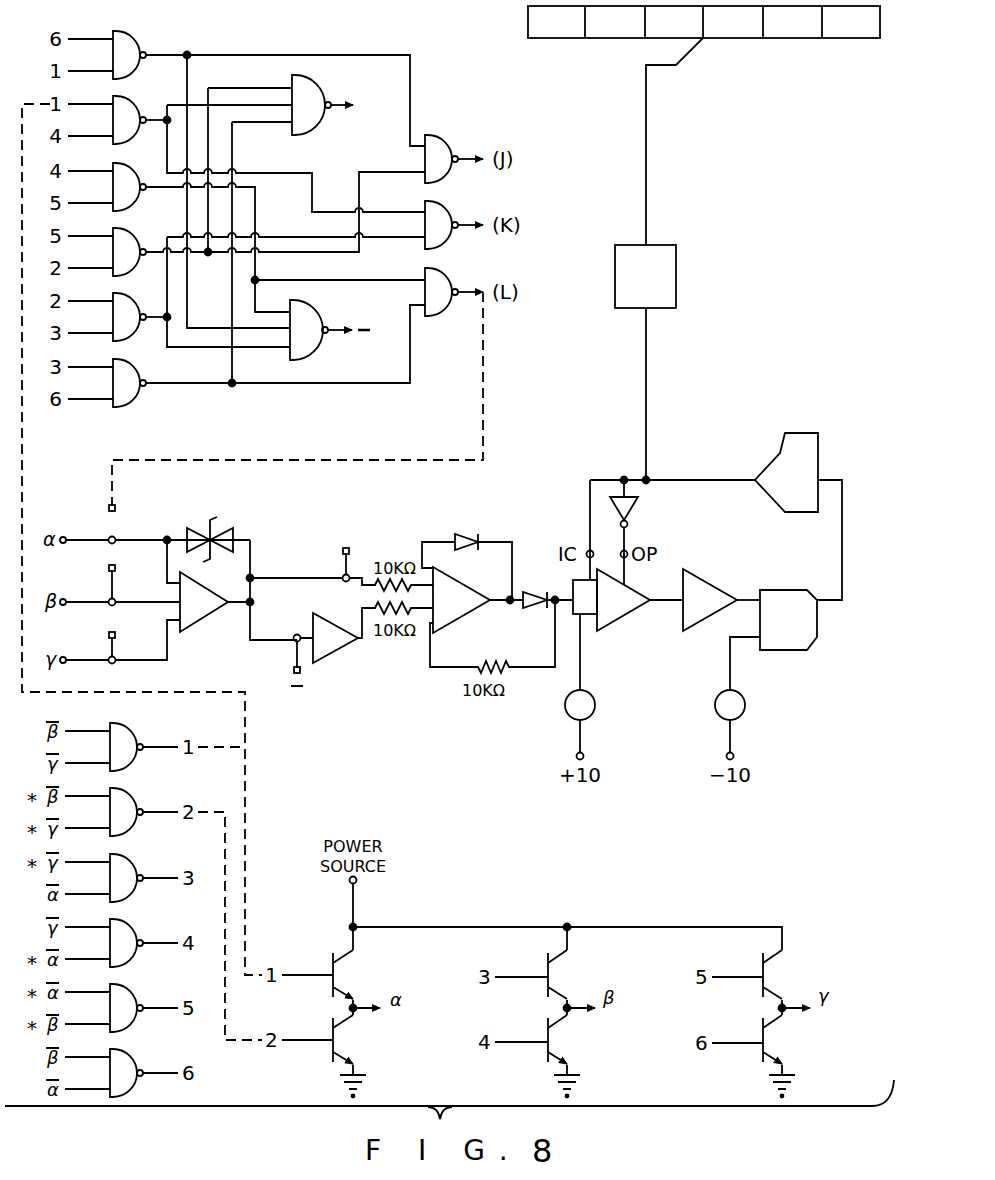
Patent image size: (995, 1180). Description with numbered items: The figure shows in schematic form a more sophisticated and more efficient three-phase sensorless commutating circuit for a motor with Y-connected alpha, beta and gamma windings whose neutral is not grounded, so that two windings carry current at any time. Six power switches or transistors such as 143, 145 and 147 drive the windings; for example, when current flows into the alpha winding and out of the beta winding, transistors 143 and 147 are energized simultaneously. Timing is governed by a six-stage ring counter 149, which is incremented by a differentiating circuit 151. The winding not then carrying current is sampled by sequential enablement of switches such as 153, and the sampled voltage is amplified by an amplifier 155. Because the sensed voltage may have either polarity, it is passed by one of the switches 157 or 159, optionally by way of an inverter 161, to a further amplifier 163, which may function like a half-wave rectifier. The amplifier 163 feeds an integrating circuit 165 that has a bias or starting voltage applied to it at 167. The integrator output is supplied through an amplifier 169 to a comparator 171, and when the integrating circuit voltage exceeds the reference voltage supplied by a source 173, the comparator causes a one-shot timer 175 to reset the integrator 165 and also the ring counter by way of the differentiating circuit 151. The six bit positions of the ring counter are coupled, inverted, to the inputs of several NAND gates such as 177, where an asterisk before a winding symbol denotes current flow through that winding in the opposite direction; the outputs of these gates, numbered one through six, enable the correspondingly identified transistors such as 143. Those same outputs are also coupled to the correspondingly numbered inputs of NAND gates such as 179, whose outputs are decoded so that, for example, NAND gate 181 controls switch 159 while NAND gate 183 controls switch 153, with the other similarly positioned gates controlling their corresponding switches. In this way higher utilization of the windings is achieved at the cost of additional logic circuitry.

The transistor 143 is at (330, 956).
The transistor 145 is at (330, 1062).
The transistor 147 is at (550, 1068).
The ring counter 149 is at (590, 39).
The differentiating circuit 151 is at (680, 281).
The switch 153 is at (110, 537).
The amplifier 155 is at (197, 626).
The switch 157 is at (296, 642).
The switch 159 is at (348, 575).
The inverter 161 is at (352, 648).
The amplifier 163 is at (462, 620).
The integrating circuit 165 is at (621, 624).
The bias voltage source 167 is at (565, 704).
The amplifier 169 is at (697, 574).
The comparator 171 is at (794, 654).
The reference voltage source 173 is at (735, 714).
The one-shot timer 175 is at (802, 433).
The NAND gate 177 is at (128, 728).
The NAND gate 179 is at (128, 33).
The NAND gate 181 is at (314, 90).
The NAND gate 183 is at (440, 135).